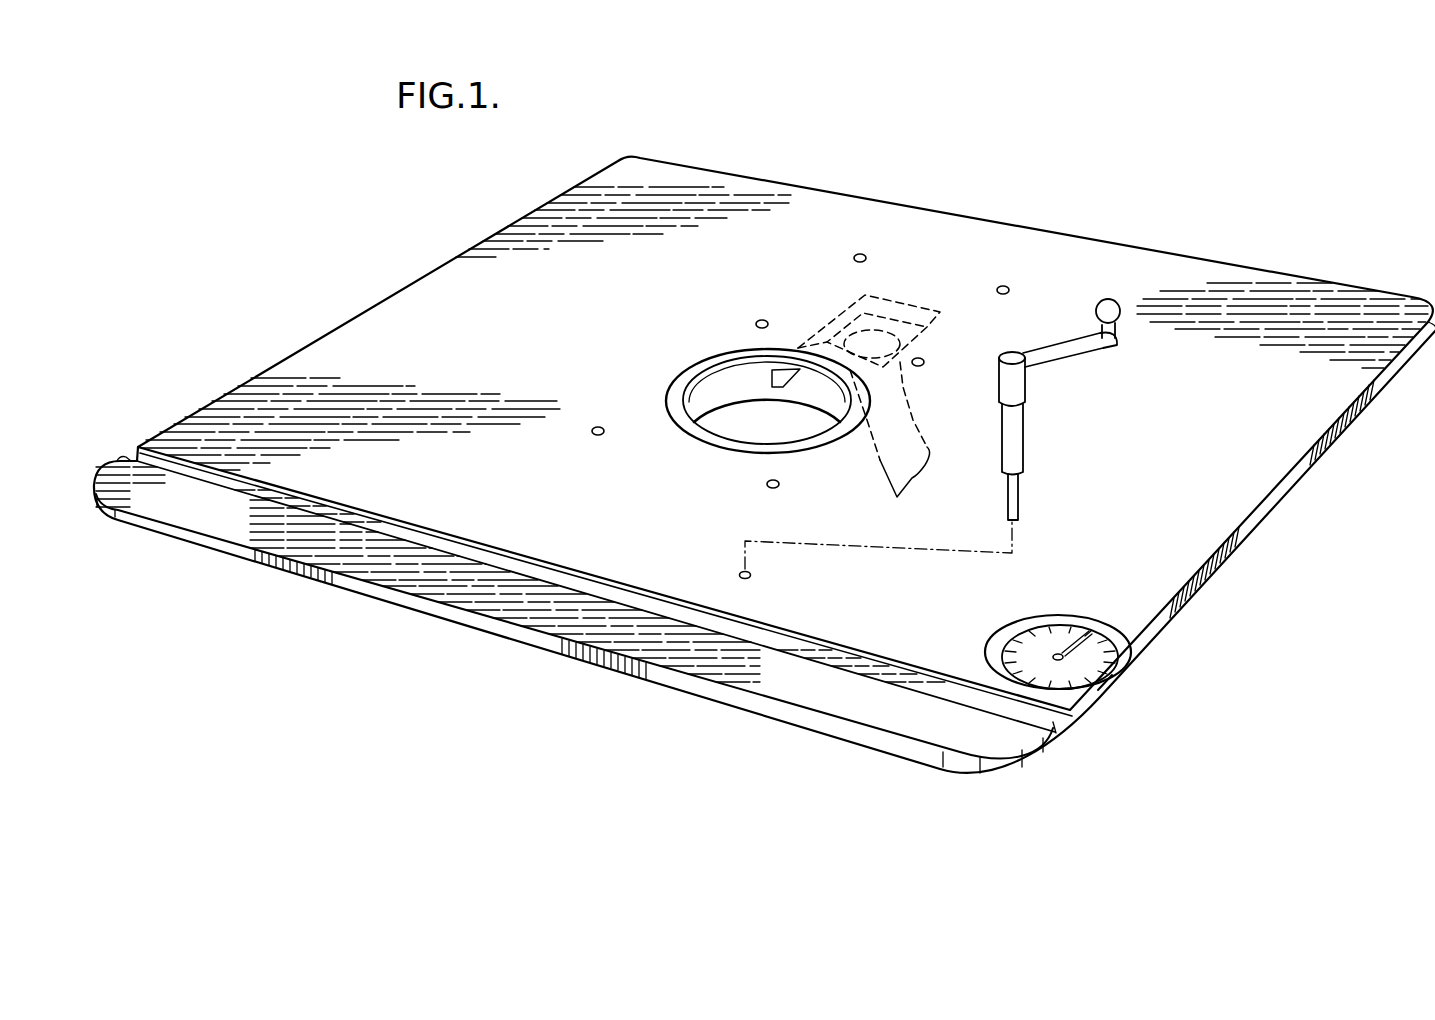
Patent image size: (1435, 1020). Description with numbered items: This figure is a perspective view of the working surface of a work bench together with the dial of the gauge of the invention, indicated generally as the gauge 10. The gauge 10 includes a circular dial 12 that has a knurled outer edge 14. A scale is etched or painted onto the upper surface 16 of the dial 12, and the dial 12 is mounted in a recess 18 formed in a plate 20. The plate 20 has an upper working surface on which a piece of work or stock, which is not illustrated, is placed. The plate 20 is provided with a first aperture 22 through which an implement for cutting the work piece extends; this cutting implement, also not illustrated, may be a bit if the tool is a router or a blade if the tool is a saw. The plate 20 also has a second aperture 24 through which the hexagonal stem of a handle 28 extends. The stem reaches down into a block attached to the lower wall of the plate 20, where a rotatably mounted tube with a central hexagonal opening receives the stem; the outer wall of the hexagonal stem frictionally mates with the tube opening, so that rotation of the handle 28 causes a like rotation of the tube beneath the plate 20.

The gauge 10 is at (1162, 679).
The circular dial 12 is at (1080, 622).
The knurled outer edge 14 is at (1107, 690).
The upper surface 16 is at (1020, 643).
The recess 18 is at (1045, 625).
The plate 20 is at (1305, 480).
The first aperture 22 is at (747, 424).
The second aperture 24 is at (741, 573).
The handle 28 is at (1082, 358).